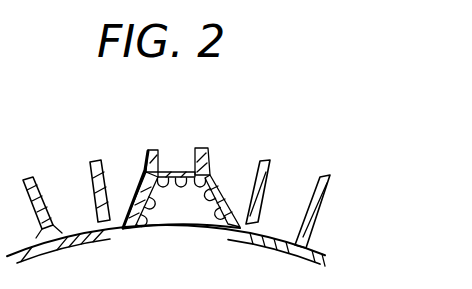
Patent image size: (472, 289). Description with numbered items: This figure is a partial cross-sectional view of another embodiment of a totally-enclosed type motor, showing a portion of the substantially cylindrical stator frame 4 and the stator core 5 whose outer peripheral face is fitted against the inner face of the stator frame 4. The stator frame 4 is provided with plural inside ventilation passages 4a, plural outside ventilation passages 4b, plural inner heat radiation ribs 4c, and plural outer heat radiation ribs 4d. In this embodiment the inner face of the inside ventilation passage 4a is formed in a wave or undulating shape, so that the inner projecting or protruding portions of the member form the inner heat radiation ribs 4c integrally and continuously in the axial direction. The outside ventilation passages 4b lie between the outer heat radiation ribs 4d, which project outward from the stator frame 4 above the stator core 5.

The stator frame 4 is at (176, 193).
The inside ventilation passage 4a is at (195, 198).
The outside ventilation passage 4b is at (296, 185).
The inner heat radiation rib 4c is at (181, 245).
The outer heat radiation rib 4d is at (134, 178).
The stator core 5 is at (183, 247).